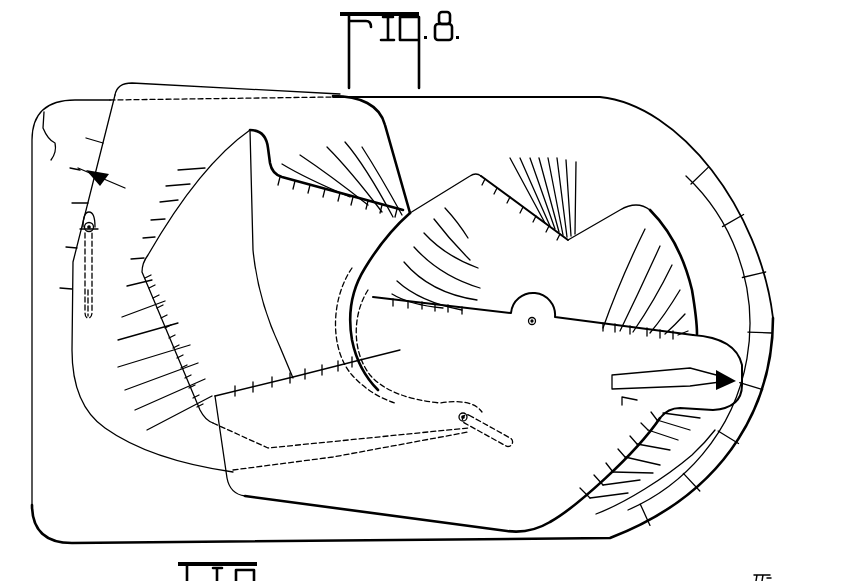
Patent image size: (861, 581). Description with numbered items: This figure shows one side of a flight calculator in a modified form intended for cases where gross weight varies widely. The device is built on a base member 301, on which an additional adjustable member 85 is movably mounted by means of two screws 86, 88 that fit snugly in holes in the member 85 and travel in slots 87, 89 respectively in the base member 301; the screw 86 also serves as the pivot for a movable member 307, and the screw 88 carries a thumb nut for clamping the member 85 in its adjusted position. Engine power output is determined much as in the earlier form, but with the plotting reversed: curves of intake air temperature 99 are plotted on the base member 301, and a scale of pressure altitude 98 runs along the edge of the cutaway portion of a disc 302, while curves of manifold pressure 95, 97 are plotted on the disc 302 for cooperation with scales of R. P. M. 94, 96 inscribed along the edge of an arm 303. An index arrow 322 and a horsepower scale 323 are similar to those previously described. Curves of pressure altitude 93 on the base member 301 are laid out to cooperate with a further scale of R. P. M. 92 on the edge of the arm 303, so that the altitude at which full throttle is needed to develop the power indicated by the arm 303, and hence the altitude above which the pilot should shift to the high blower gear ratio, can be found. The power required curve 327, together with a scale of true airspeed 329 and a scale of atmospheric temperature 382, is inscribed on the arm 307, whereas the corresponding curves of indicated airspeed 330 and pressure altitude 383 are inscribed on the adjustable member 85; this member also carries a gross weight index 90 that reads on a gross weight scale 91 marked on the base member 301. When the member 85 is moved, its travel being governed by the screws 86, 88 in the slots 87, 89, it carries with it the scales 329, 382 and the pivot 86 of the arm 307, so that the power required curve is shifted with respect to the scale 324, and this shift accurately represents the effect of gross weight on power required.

The adjustable member 85 is at (143, 140).
The screw 86 is at (465, 411).
The slot 87 is at (508, 432).
The screw 88 is at (97, 226).
The slot 89 is at (90, 320).
The gross weight index 90 is at (119, 186).
The gross weight scale 91 is at (45, 110).
The scale of R. P. M. 92 is at (563, 471).
The curves of pressure altitude 93 is at (697, 458).
The scale of R. P. M. 94 is at (442, 330).
The curves of manifold pressure 95 is at (438, 205).
The scale of R. P. M. 96 is at (607, 356).
The curves of manifold pressure 97 is at (624, 262).
The scale of pressure altitude 98 is at (511, 218).
The curves of intake air temperature 99 is at (571, 173).
The base member 301 is at (643, 121).
The disc 302 is at (463, 175).
The arm 303 is at (433, 510).
The movable member 307 is at (250, 128).
The index arrow 322 is at (722, 372).
The horsepower scale 323 is at (727, 227).
The scale 324 is at (286, 402).
The power required curve 327 is at (250, 193).
The scale of true airspeed 329 is at (213, 313).
The curves of indicated airspeed 330 is at (160, 176).
The scale of atmospheric temperature 382 is at (324, 222).
The curves of pressure altitude 383 is at (368, 141).